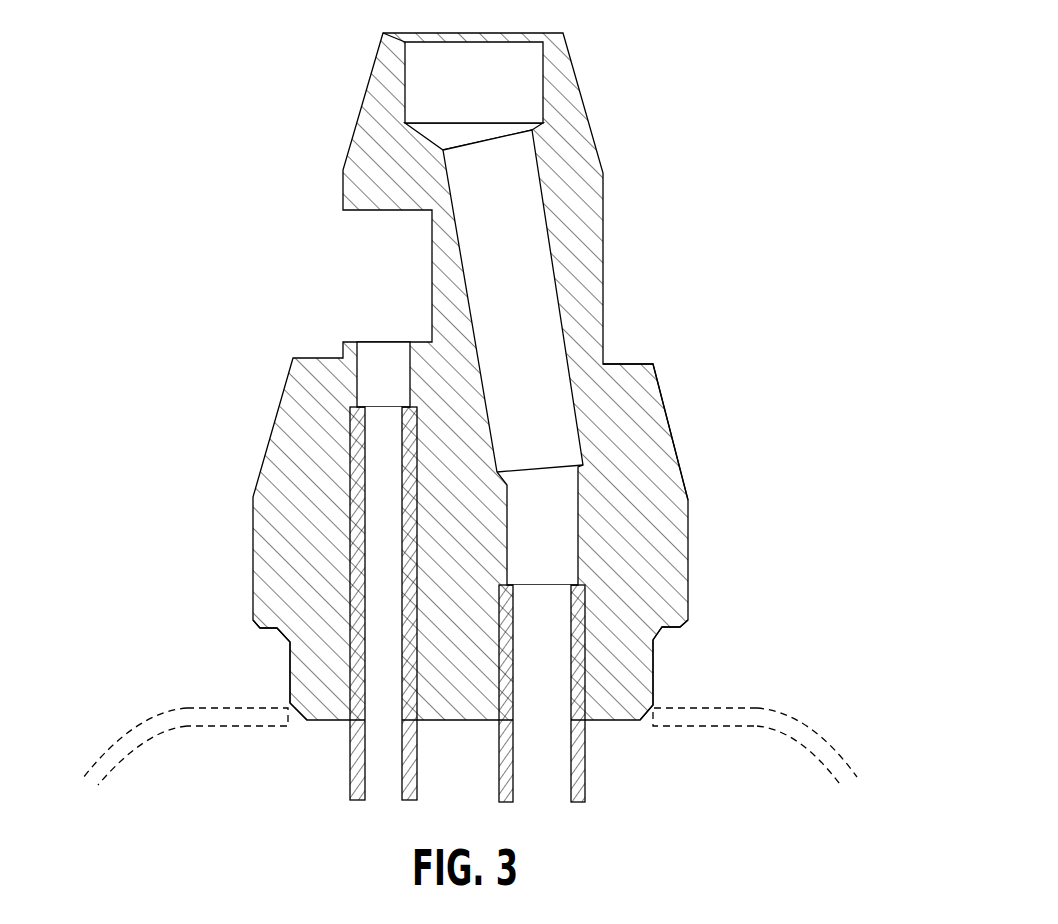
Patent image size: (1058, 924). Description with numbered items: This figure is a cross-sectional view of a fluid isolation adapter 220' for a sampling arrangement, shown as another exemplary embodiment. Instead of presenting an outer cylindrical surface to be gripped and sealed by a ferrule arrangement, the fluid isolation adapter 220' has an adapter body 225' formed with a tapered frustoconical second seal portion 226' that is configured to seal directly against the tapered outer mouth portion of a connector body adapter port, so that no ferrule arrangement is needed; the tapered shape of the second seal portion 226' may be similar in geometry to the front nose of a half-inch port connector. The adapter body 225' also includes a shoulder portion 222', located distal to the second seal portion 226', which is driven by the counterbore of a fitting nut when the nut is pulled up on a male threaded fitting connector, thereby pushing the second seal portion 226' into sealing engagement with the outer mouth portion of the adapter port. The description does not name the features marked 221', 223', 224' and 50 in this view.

The fluid isolation adapter 220' is at (500, 376).
The fluid passage / channel 221' is at (645, 466).
The shoulder portion 222' is at (227, 722).
The tube 223' is at (264, 603).
The upper cavity / head portion 224' is at (576, 72).
The adapter body 225' is at (749, 651).
The second seal portion 226' is at (730, 374).
The mounting surface 50 is at (125, 728).